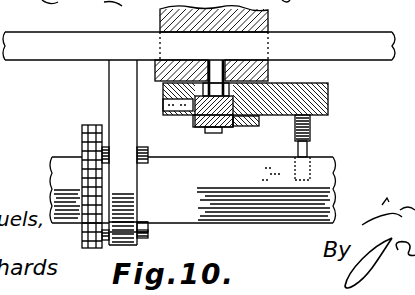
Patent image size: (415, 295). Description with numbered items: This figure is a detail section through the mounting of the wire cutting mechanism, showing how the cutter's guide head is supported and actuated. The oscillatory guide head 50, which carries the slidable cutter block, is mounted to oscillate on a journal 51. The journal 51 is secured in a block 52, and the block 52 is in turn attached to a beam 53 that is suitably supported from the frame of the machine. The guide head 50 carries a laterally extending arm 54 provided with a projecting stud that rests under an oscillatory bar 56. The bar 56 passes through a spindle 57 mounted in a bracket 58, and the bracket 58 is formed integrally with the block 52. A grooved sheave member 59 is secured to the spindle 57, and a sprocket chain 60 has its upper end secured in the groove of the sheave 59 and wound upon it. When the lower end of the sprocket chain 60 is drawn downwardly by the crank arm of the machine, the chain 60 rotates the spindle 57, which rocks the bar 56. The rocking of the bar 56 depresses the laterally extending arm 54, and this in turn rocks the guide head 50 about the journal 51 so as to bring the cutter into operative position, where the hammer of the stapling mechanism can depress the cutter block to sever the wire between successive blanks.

The oscillatory guide head 50 is at (143, 88).
The journal 51 is at (215, 80).
The block 52 is at (268, 69).
The beam 53 is at (199, 46).
The laterally extending arm 54 is at (328, 97).
The oscillatory bar 56 is at (193, 190).
The spindle 57 is at (142, 225).
The bracket 58 is at (118, 123).
The grooved sheave member 59 is at (83, 156).
The sprocket chain 60 is at (83, 136).